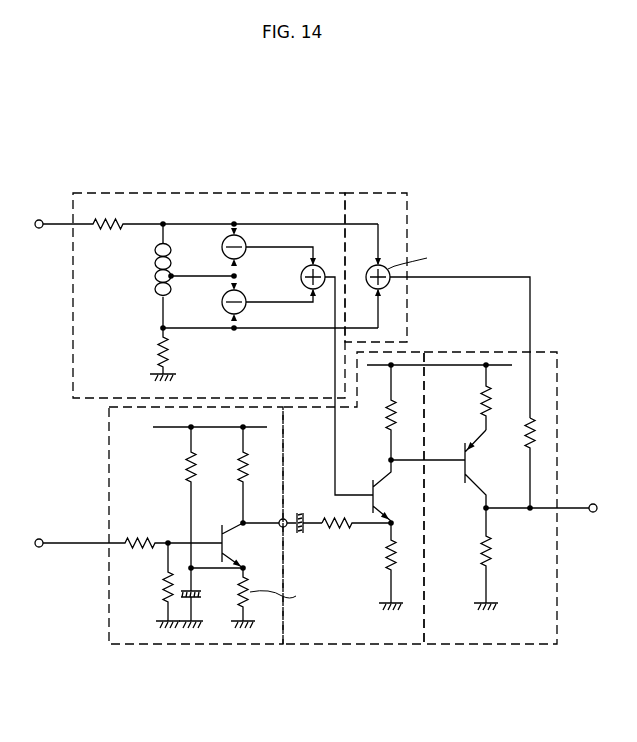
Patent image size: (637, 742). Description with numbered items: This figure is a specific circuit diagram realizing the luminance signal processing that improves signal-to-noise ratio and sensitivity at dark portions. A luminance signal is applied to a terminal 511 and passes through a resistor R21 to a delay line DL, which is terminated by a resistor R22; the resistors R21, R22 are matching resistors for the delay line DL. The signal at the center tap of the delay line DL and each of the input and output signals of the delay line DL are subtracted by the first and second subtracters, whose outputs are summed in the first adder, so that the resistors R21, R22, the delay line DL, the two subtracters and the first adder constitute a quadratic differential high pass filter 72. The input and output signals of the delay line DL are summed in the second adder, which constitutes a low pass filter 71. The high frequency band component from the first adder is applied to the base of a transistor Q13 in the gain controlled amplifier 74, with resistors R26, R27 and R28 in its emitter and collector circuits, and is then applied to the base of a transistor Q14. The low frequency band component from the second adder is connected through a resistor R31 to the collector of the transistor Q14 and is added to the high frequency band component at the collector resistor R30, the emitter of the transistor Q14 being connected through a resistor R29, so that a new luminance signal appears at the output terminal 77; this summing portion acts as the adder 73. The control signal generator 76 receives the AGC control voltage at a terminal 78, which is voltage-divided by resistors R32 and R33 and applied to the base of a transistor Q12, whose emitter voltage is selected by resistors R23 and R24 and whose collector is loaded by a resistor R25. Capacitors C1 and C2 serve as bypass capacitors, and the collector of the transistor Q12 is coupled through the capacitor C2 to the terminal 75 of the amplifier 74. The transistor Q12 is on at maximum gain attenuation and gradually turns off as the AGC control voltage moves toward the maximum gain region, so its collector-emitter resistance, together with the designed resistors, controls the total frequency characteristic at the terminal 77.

The terminal 511 is at (40, 229).
The high pass filter 72 is at (300, 193).
The low pass filter 71 is at (374, 193).
The adder 73 is at (470, 648).
The gain controlled amplifier 74 is at (353, 648).
The terminal 75 is at (280, 520).
The control signal generator 76 is at (145, 646).
The output terminal 77 is at (593, 503).
The terminal 78 is at (40, 548).
The resistor R21 is at (103, 236).
The resistor R22 is at (143, 354).
The delay line DL is at (154, 276).
The resistor R23 is at (169, 497).
The resistor R25 is at (226, 475).
The resistor R32 is at (105, 531).
The resistor R33 is at (151, 585).
The capacitor C1 is at (202, 598).
The resistor R24 is at (280, 598).
The transistor Q12 is at (216, 545).
The capacitor C2 is at (304, 510).
The resistor R26 is at (356, 538).
The resistor R27 is at (374, 566).
The resistor R28 is at (369, 412).
The transistor Q13 is at (396, 490).
The resistor R29 is at (464, 397).
The resistor R30 is at (501, 559).
The resistor R31 is at (512, 463).
The transistor Q14 is at (489, 469).